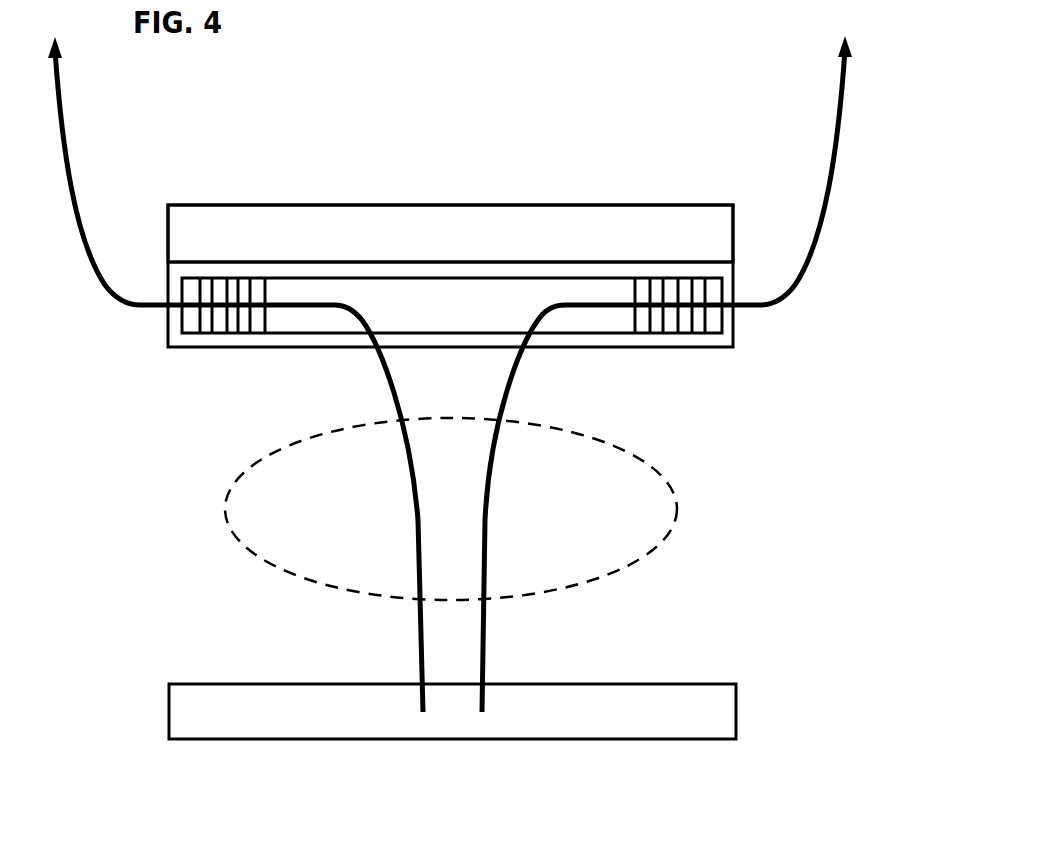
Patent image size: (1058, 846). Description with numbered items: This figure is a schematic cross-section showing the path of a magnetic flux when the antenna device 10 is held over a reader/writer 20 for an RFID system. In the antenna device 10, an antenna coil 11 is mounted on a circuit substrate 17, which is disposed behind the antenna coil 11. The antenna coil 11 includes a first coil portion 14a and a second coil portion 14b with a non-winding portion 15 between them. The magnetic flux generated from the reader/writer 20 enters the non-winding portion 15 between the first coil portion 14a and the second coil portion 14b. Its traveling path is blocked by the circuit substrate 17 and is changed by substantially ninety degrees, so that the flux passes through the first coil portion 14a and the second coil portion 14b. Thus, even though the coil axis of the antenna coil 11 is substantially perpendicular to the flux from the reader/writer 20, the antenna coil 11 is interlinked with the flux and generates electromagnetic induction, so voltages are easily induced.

The antenna device 10 is at (204, 204).
The antenna coil 11 is at (360, 233).
The non-winding portion 15 is at (559, 279).
The circuit substrate 17 is at (640, 230).
The first coil portion 14a is at (267, 355).
The second coil portion 14b is at (704, 355).
The reader/writer 20 is at (255, 712).